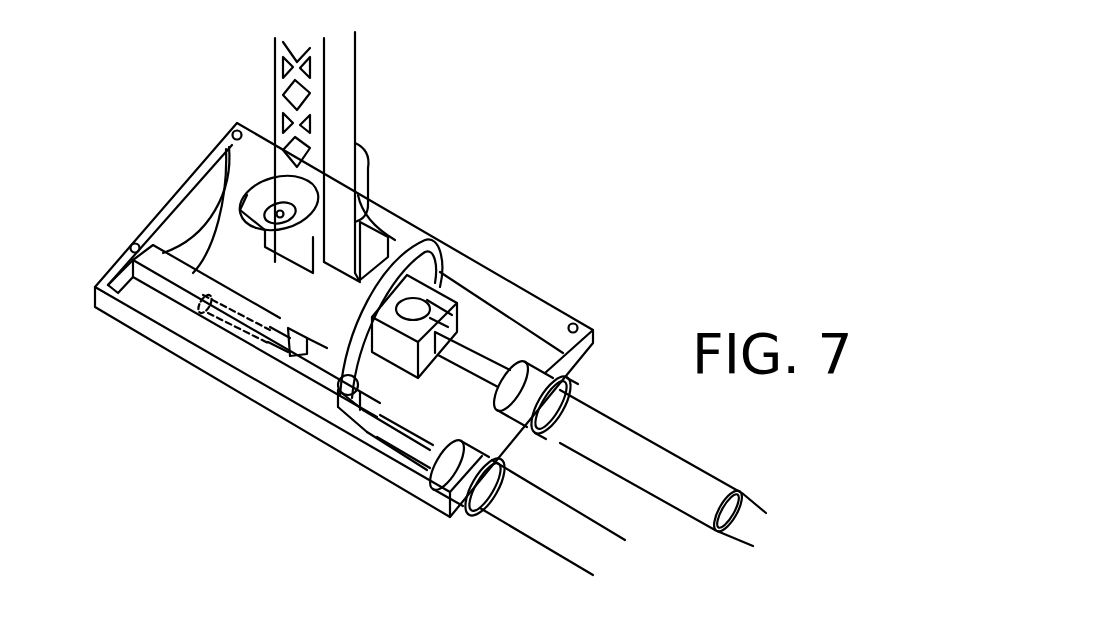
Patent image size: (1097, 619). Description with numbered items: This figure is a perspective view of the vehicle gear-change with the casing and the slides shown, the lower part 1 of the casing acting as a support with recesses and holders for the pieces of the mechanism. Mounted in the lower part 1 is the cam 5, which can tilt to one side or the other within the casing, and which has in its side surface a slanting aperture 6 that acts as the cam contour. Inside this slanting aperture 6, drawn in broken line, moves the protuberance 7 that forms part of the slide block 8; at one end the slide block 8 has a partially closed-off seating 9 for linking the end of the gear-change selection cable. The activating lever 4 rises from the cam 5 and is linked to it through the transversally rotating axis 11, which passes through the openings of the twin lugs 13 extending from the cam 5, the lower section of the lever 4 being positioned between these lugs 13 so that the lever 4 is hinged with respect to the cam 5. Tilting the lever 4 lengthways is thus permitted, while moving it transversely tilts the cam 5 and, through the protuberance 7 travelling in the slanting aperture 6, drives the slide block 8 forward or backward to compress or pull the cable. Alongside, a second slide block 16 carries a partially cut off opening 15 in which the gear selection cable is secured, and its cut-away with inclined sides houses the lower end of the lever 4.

The lower part of the casing 1 is at (212, 373).
The activating lever 4 is at (342, 77).
The cam 5 is at (223, 252).
The slanting aperture 6 is at (318, 347).
The protuberance 7 is at (273, 352).
The slide block 8 is at (197, 300).
The partially closed-off seating 9 is at (348, 387).
The transversally rotating axis 11 is at (302, 243).
The twin lugs 13 is at (315, 237).
The partially cut off opening 15 is at (433, 293).
The second slide block 16 is at (418, 263).